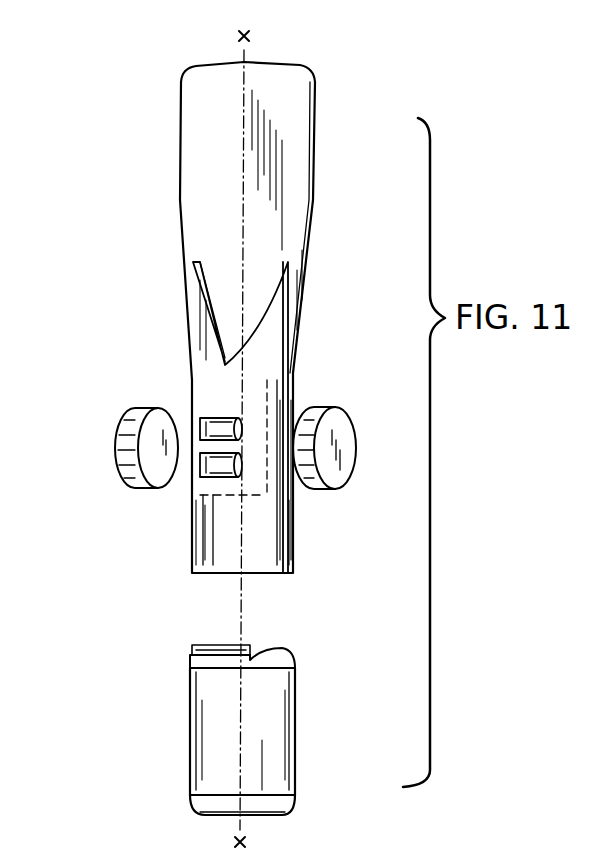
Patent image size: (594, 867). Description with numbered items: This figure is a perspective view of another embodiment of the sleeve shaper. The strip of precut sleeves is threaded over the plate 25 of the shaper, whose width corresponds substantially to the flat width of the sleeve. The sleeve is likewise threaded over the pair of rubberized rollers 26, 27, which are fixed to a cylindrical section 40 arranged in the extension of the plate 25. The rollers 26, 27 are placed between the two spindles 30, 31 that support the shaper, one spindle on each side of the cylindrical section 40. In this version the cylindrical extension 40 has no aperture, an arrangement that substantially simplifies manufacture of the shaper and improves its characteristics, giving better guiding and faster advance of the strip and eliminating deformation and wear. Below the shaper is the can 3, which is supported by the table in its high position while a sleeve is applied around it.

The plate 25 is at (190, 193).
The rubberized roller 26 is at (204, 413).
The rubberized roller 27 is at (197, 478).
The spindle 30 is at (128, 445).
The spindle 31 is at (340, 418).
The cylindrical section 40 is at (207, 537).
The can 3 is at (207, 702).